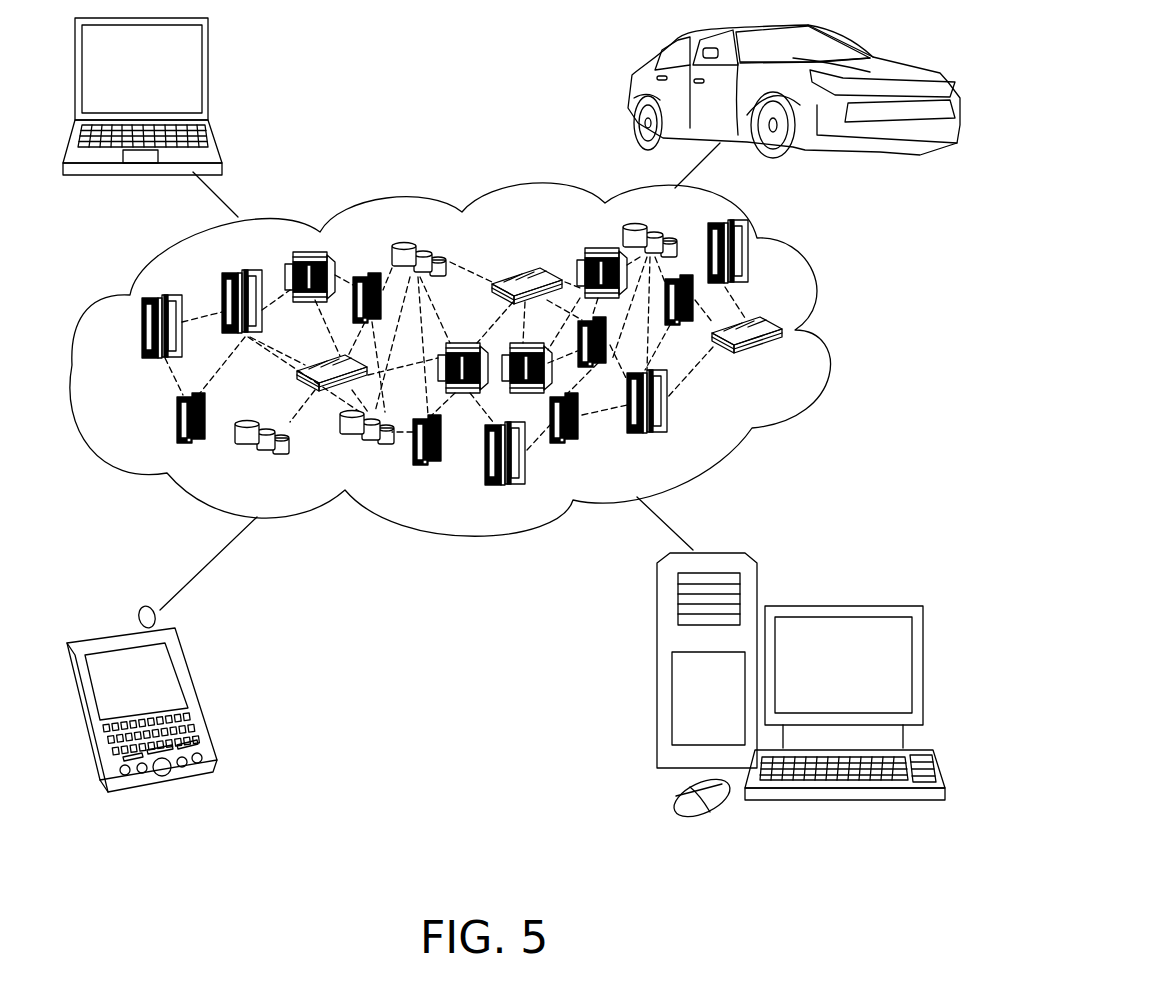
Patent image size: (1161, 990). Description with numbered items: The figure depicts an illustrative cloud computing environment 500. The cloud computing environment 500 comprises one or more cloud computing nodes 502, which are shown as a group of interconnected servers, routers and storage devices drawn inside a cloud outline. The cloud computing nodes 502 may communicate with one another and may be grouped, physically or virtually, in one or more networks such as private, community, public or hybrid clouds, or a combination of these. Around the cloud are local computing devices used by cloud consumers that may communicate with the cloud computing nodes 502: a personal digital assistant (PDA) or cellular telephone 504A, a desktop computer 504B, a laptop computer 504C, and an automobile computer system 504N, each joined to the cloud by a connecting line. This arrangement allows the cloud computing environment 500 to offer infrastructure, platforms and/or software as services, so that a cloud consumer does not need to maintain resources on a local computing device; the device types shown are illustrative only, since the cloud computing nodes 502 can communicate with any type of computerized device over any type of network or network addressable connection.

The cloud computing environment 500 is at (792, 330).
The cloud computing nodes 502 is at (790, 365).
The personal digital assistant (PDA) or cellular telephone 504A is at (188, 662).
The desktop computer 504B is at (830, 603).
The laptop computer 504C is at (208, 58).
The automobile computer system 504N is at (632, 98).